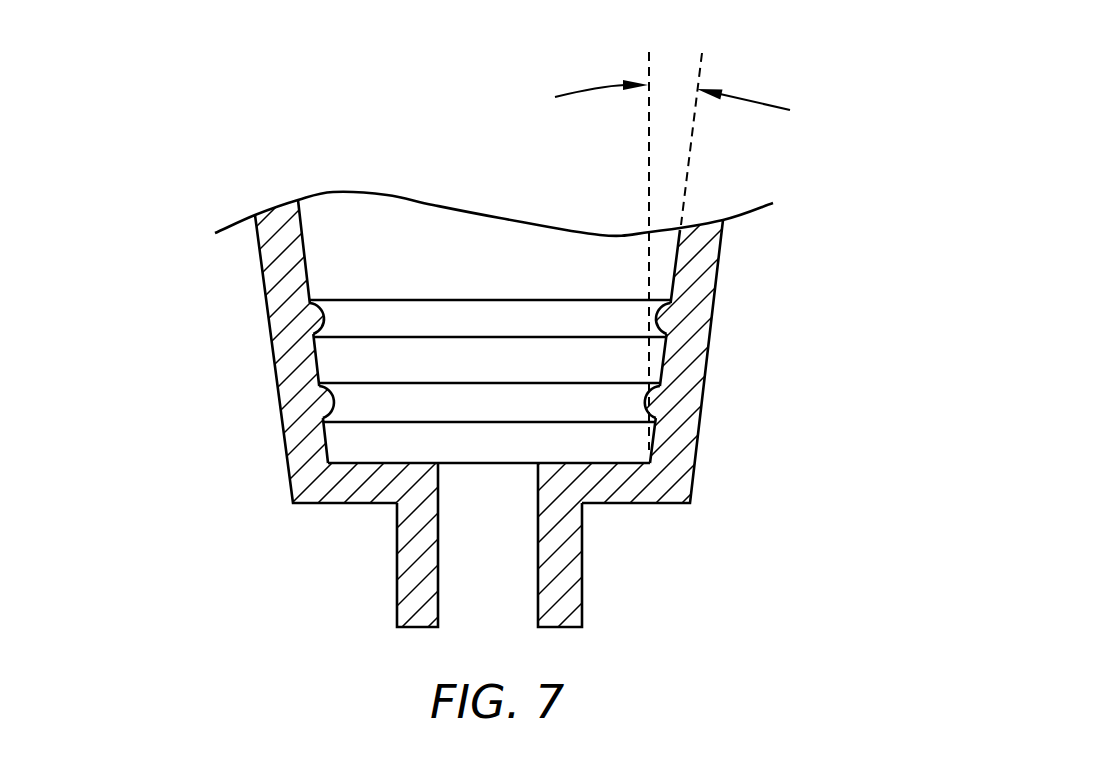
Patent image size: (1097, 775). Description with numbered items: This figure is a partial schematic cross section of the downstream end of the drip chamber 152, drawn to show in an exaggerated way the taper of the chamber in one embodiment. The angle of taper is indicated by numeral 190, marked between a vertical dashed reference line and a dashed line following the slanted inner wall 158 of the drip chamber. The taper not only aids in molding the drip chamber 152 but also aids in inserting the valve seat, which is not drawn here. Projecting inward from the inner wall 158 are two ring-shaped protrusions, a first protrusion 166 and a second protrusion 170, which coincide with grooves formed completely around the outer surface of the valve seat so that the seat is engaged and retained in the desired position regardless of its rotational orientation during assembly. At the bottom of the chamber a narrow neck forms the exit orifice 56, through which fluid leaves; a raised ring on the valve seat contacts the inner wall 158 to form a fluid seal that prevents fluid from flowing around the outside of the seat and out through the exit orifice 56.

The exit orifice 56 is at (397, 549).
The drip chamber 152 is at (267, 318).
The inner wall 158 is at (302, 232).
The first protrusion 166 is at (335, 400).
The second protrusion 170 is at (325, 312).
The angle of taper 190 is at (675, 70).